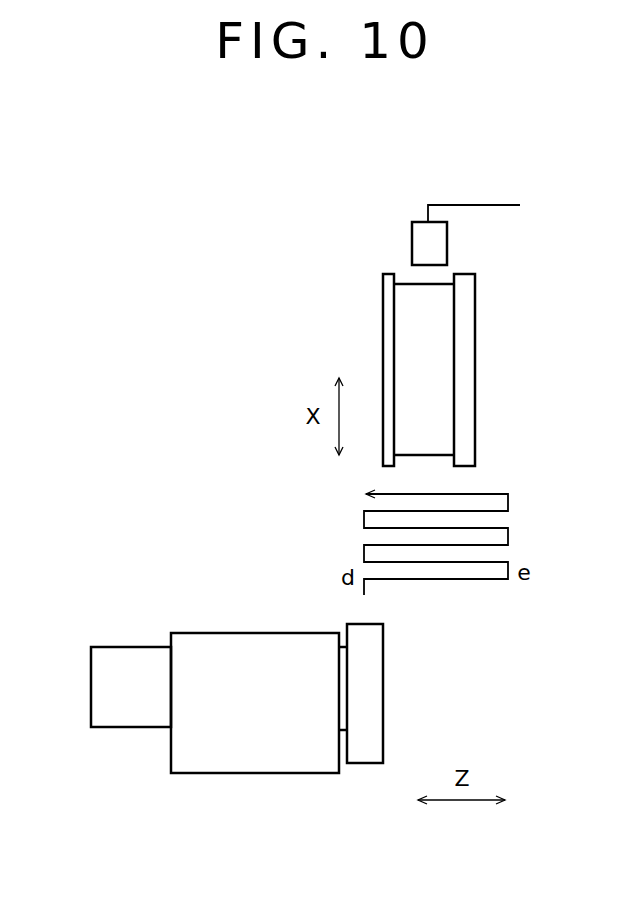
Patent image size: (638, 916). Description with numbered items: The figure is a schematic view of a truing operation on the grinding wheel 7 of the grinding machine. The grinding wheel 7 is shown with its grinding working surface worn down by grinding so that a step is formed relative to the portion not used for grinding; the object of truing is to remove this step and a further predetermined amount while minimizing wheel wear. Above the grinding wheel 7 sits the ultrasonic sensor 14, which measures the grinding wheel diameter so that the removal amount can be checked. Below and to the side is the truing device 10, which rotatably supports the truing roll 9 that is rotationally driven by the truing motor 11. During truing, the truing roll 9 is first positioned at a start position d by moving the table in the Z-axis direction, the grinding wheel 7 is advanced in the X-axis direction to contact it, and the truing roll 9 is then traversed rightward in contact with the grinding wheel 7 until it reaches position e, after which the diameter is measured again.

The ultrasonic sensor 14 is at (418, 247).
The grinding wheel 7 is at (416, 343).
The truing motor 11 is at (131, 660).
The truing device 10 is at (250, 647).
The truing roll 9 is at (360, 628).